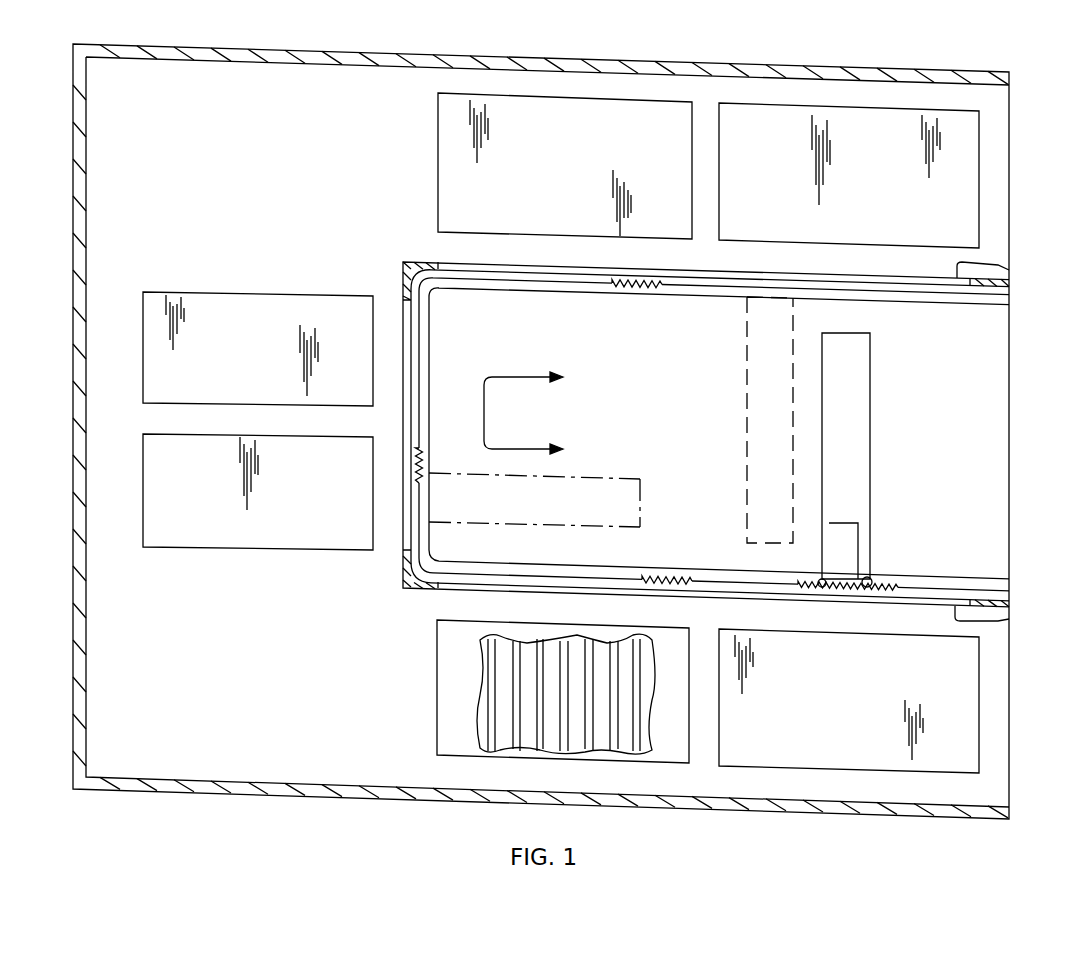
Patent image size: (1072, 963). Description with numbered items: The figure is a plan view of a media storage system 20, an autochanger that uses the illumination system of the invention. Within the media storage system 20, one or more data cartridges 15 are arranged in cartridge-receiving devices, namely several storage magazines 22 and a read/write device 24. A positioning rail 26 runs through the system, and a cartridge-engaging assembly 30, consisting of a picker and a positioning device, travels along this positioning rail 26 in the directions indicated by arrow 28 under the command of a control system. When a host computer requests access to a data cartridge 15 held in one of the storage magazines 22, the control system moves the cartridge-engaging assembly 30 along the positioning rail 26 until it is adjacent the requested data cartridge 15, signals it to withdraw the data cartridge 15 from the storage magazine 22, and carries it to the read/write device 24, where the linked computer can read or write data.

The data cartridge 15 is at (505, 715).
The media storage system 20 is at (408, 44).
The storage magazine 22 is at (677, 102).
The read/write device 24 is at (172, 434).
The positioning rail 26 is at (1010, 269).
The arrow 28 is at (484, 412).
The cartridge-engaging assembly 30 is at (876, 440).